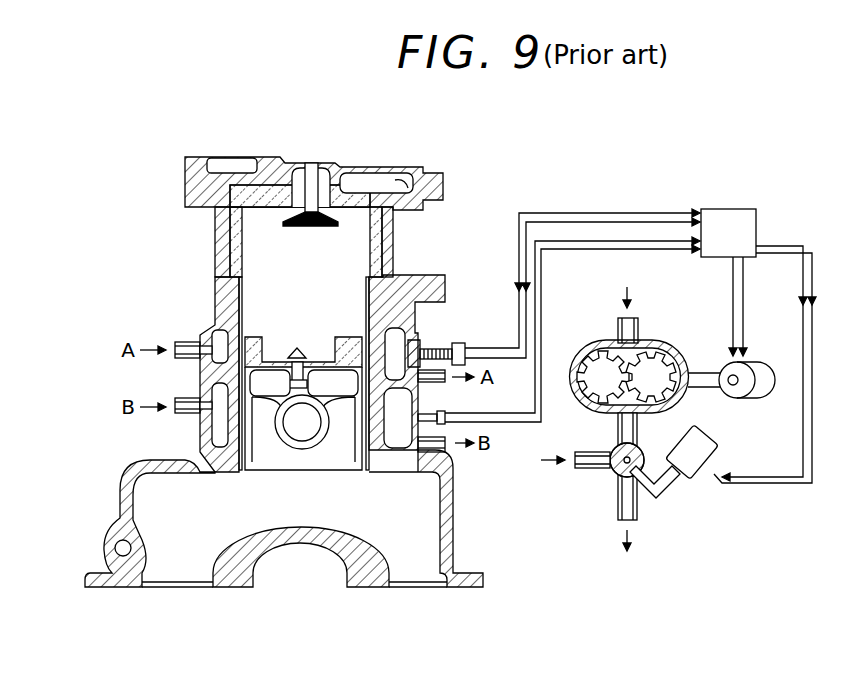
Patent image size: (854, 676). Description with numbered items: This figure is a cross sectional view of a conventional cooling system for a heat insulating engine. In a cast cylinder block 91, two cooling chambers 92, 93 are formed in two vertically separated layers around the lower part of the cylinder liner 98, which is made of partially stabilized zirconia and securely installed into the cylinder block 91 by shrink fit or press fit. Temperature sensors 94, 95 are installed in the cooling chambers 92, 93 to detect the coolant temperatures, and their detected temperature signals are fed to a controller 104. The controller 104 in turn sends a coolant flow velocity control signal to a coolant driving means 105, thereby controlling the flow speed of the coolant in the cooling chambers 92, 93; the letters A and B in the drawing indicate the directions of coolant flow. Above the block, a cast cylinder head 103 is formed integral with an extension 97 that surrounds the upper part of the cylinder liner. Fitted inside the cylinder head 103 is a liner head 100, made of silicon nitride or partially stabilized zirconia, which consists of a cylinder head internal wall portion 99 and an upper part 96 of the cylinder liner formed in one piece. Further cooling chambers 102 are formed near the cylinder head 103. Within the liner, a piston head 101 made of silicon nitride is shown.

The cylinder block 91 is at (206, 386).
The cooling chamber 92 is at (214, 345).
The cooling chamber 93 is at (218, 436).
The temperature sensor 94 is at (440, 348).
The temperature sensor 95 is at (446, 413).
The upper part of the cylinder liner 96 is at (238, 252).
The extension 97 is at (221, 250).
The cylinder liner 98 is at (368, 298).
The cylinder head internal wall portion 99 is at (268, 202).
The liner head 100 is at (367, 214).
The piston head 101 is at (346, 339).
The cooling chambers 102 is at (232, 162).
The cylinder head 103 is at (200, 186).
The controller 104 is at (716, 215).
The coolant driving means 105 is at (655, 345).